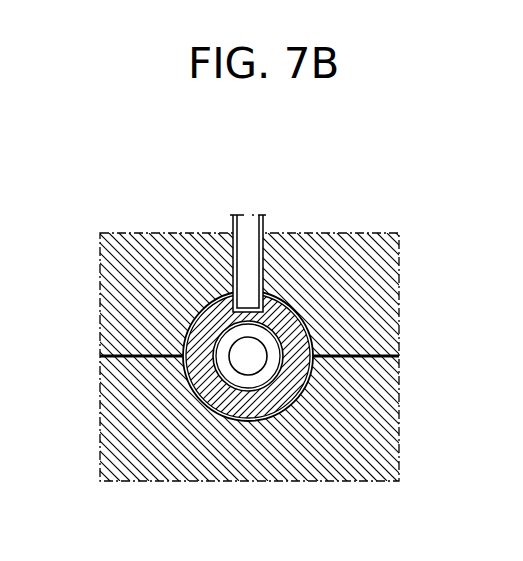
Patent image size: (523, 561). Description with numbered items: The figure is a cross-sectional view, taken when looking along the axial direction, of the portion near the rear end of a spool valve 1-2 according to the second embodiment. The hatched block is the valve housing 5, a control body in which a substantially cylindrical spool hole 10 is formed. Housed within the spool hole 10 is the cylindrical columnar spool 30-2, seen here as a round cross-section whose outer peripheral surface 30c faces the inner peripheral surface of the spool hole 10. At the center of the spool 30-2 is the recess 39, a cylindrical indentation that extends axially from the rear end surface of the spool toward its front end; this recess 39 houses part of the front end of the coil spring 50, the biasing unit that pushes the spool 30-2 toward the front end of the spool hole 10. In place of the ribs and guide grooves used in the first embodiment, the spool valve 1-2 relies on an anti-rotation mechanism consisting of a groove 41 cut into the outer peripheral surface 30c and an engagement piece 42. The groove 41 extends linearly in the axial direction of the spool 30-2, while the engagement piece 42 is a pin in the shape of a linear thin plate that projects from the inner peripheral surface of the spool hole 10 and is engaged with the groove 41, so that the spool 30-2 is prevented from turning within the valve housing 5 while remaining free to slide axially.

The spool valve 1-2 is at (358, 150).
The valve housing 5 is at (400, 339).
The spool hole 10 is at (303, 334).
The spool 30-2 is at (284, 303).
The outer peripheral surface 30c is at (288, 325).
The recess 39 is at (263, 371).
The groove 41 is at (245, 310).
The engagement piece 42 is at (250, 265).
The coil spring 50 is at (230, 343).